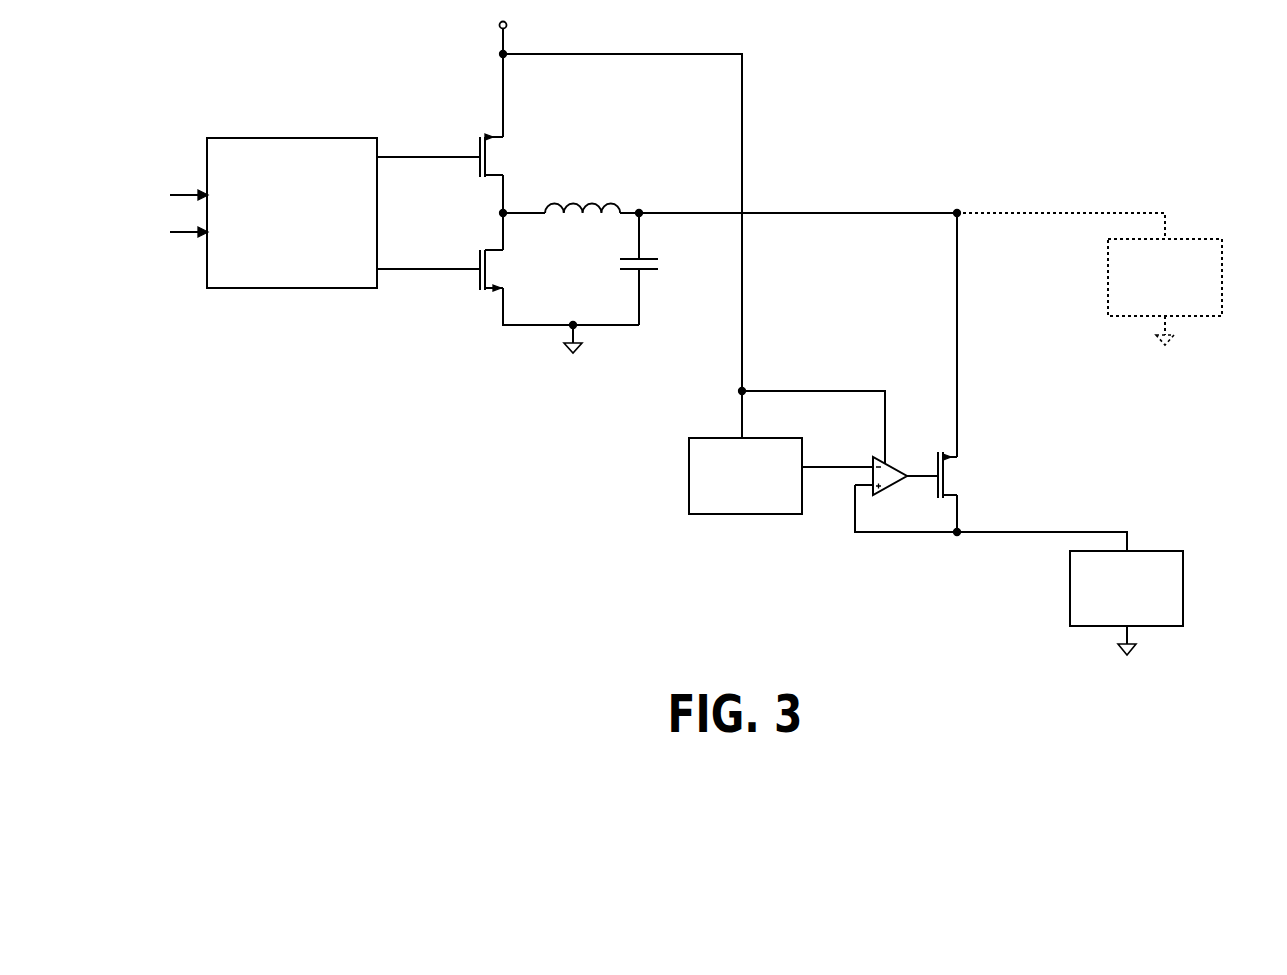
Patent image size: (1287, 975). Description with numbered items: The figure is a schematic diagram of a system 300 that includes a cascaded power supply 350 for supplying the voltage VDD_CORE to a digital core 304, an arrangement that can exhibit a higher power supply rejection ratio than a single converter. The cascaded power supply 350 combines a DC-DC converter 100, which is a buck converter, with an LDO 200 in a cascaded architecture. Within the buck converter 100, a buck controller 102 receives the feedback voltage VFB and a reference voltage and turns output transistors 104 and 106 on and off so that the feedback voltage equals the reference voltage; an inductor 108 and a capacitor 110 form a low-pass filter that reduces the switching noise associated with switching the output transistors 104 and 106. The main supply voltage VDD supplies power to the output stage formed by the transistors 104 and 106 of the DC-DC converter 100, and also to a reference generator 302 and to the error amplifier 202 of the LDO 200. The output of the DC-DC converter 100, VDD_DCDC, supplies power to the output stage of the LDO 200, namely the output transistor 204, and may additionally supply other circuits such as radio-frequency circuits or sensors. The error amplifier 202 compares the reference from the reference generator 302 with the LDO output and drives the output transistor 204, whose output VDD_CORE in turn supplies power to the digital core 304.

The buck converter 100 is at (180, 106).
The buck controller 102 is at (330, 138).
The output transistor 104 is at (487, 167).
The output transistor 106 is at (487, 277).
The inductor 108 is at (574, 203).
The capacitor 110 is at (646, 259).
The LDO 200 is at (1015, 393).
The error amplifier 202 is at (880, 497).
The output transistor 204 is at (942, 488).
The system 300 is at (1223, 66).
The reference generator 302 is at (756, 438).
The digital core 304 is at (1147, 552).
The cascaded power supply 350 is at (1034, 149).